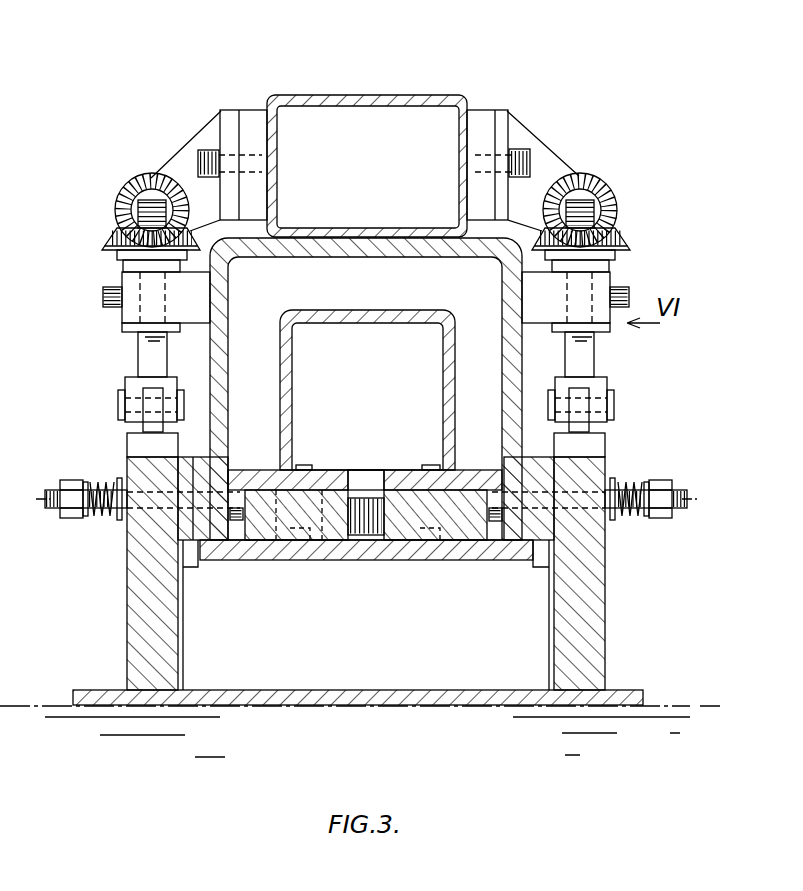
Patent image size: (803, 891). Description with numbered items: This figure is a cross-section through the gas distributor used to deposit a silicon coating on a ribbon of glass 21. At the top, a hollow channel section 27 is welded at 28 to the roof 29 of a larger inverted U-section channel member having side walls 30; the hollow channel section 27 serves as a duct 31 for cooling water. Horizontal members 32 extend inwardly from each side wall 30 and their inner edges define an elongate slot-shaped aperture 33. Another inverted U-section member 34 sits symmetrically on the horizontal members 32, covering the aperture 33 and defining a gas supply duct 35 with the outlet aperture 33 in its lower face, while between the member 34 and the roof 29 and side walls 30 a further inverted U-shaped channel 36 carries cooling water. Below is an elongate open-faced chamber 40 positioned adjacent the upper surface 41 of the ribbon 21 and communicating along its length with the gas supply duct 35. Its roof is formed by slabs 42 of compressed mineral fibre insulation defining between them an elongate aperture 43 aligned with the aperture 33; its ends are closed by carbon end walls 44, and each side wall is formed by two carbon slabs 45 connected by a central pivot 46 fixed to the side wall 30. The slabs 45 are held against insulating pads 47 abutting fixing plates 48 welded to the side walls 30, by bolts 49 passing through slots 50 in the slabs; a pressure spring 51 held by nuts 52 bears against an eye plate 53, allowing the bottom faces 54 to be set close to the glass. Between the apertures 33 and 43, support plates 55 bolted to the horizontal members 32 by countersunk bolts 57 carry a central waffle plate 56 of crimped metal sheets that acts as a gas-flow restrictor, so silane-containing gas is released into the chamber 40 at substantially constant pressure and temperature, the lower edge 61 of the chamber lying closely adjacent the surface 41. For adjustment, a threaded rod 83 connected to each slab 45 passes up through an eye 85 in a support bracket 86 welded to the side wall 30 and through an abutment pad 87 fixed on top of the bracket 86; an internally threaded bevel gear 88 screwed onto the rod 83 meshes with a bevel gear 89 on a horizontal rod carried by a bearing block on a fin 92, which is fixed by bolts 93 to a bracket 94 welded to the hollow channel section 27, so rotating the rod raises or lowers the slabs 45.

The ribbon of glass 21 is at (75, 695).
The hollow channel section 27 is at (352, 95).
The weld 28 is at (468, 248).
The roof 29 is at (345, 248).
The side walls 30 is at (220, 300).
The duct 31 is at (344, 163).
The horizontal members 32 is at (262, 456).
The slot-shaped aperture 33 is at (372, 470).
The inverted U-section member 34 is at (396, 318).
The gas supply duct 35 is at (376, 398).
The channel 36 is at (266, 398).
The open-faced chamber 40 is at (414, 643).
The upper surface 41 is at (92, 690).
The slabs 42 is at (312, 560).
The elongate aperture 43 is at (366, 560).
The carbon end walls 44 is at (545, 652).
The carbon slabs 45 is at (133, 608).
The central pivot 46 is at (232, 528).
The insulating pads 47 is at (200, 452).
The fixing plates 48 is at (195, 545).
The bolts 49 is at (112, 490).
The slots 50 is at (127, 440).
The pressure spring 51 is at (118, 516).
The nuts 52 is at (62, 480).
The eye plate 53 is at (124, 530).
The bottom faces 54 is at (148, 692).
The support plates 55 is at (332, 490).
The waffle plate 56 is at (378, 535).
The bolts 57 is at (305, 465).
The lower edge 61 is at (290, 690).
The threaded rod 83 is at (138, 352).
The eye 85 is at (122, 302).
The support bracket 86 is at (205, 305).
The abutment pad 87 is at (122, 282).
The bevel gear 88 is at (108, 238).
The bevel gear 89 is at (142, 176).
The fin 92 is at (188, 148).
The bolts 93 is at (215, 150).
The bracket 94 is at (250, 110).